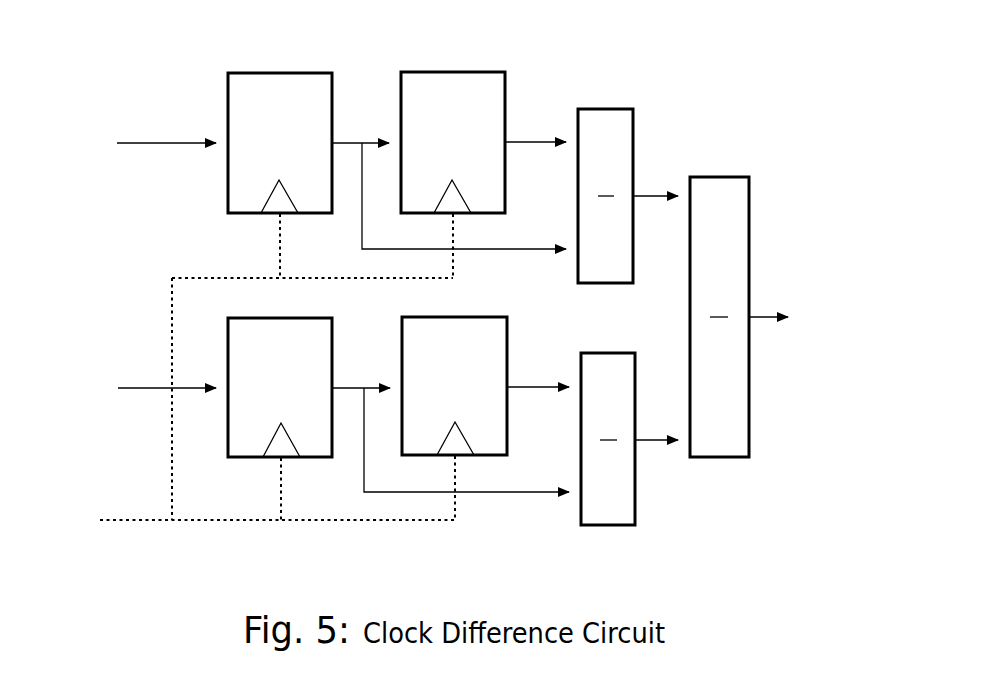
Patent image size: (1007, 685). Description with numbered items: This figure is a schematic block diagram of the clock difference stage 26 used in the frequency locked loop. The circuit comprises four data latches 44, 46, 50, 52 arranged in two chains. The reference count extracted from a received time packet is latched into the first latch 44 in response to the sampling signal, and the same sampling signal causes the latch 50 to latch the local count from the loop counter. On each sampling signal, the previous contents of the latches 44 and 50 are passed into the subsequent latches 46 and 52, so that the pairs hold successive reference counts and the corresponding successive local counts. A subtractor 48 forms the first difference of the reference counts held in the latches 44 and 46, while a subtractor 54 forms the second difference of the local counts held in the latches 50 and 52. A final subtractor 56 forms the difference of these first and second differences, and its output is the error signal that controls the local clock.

The clock difference stage 26 is at (712, 96).
The data latch 44 is at (227, 92).
The data latch 46 is at (506, 93).
The subtractor 48 is at (600, 108).
The data latch 50 is at (243, 458).
The data latch 52 is at (508, 340).
The subtractor 54 is at (603, 526).
The subtractor 56 is at (717, 458).